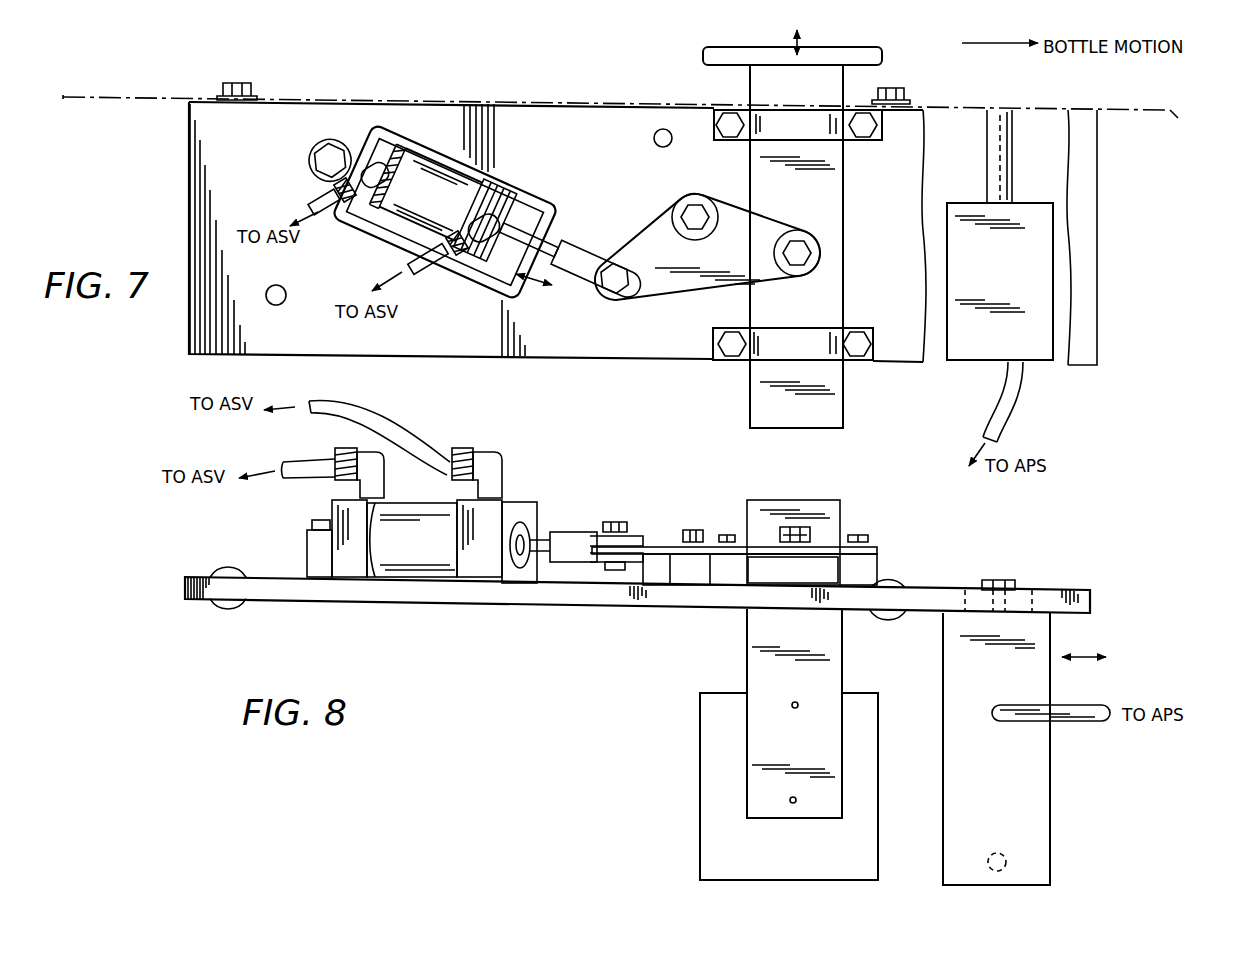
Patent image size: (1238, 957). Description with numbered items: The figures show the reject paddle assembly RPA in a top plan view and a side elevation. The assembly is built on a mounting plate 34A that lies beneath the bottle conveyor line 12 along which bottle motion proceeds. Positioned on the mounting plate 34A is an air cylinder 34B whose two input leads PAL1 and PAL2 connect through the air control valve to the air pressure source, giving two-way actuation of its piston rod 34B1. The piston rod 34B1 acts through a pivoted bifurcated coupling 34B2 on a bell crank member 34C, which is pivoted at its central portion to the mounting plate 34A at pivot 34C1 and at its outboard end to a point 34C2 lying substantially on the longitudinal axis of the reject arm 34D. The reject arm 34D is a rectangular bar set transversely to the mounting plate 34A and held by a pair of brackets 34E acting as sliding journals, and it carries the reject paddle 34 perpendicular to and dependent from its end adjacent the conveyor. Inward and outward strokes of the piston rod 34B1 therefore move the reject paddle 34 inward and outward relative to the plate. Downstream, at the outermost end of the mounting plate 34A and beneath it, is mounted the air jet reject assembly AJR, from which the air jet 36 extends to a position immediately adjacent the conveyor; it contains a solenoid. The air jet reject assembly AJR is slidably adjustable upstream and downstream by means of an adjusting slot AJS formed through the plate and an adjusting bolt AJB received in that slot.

In FIG. 7, the conveyor / bottle line 12 is at (1140, 110).
In FIG. 7, the reject paddle 34 is at (876, 45).
In FIG. 7, the mounting plate 34A is at (627, 347).
In FIG. 8, the mounting plate 34A is at (518, 603).
In FIG. 7, the air cylinder 34B is at (445, 211).
In FIG. 8, the air cylinder 34B is at (443, 550).
In FIG. 7, the piston rod 34B1 is at (545, 245).
In FIG. 8, the piston rod 34B1 is at (541, 540).
In FIG. 7, the pivoted bifurcated coupling 34B2 is at (583, 272).
In FIG. 8, the pivoted bifurcated coupling 34B2 is at (575, 550).
In FIG. 7, the bell crank member 34C is at (713, 283).
In FIG. 7, the pivot 34C1 is at (695, 212).
In FIG. 7, the pivot point 34C2 is at (795, 250).
In FIG. 7, the reject arm 34D is at (822, 313).
In FIG. 8, the reject arm 34D is at (811, 581).
In FIG. 7, the brackets 34E is at (818, 136).
In FIG. 8, the brackets 34E is at (758, 552).
In FIG. 7, the air jet 36 is at (1040, 130).
In FIG. 8, the air jet 36 is at (1000, 851).
In FIG. 7, the input lead PAL1 is at (318, 203).
In FIG. 8, the input lead PAL1 is at (307, 463).
In FIG. 7, the input lead PAL2 is at (420, 273).
In FIG. 7, the reject paddle assembly RPA is at (600, 381).
In FIG. 8, the reject paddle assembly RPA is at (512, 650).
In FIG. 7, the air jet reject assembly AJR is at (1022, 293).
In FIG. 8, the air jet reject assembly AJR is at (1015, 695).
In FIG. 8, the adjusting screw or bolt AJB is at (993, 579).
In FIG. 8, the slot AJS is at (1023, 598).